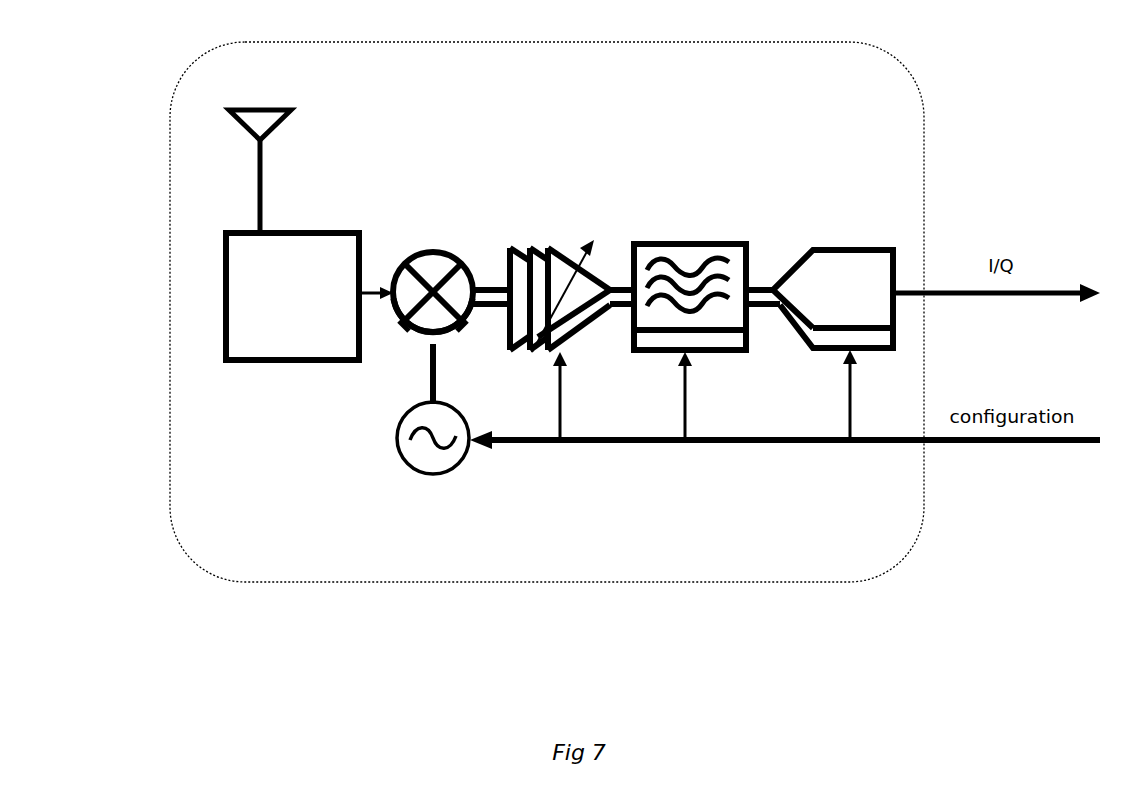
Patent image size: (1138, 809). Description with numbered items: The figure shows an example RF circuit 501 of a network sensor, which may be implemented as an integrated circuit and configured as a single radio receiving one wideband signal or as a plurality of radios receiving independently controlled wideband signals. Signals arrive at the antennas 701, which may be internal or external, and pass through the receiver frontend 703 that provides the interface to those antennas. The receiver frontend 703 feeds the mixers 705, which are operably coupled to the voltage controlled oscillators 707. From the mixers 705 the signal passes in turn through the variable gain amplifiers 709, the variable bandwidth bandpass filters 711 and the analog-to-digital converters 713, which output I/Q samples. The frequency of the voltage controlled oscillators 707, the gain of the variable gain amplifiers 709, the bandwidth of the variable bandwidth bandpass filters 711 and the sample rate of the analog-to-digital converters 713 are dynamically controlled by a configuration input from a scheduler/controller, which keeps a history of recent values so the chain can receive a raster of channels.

The RF circuit 501 is at (547, 312).
The antennas 701 is at (266, 142).
The receiver frontend 703 is at (309, 296).
The mixers 705 is at (445, 296).
The voltage controlled oscillators 707 is at (682, 457).
The variable gain amplifiers 709 is at (559, 296).
The variable bandwidth bandpass filters 711 is at (710, 295).
The analog-to-digital converters 713 is at (936, 345).